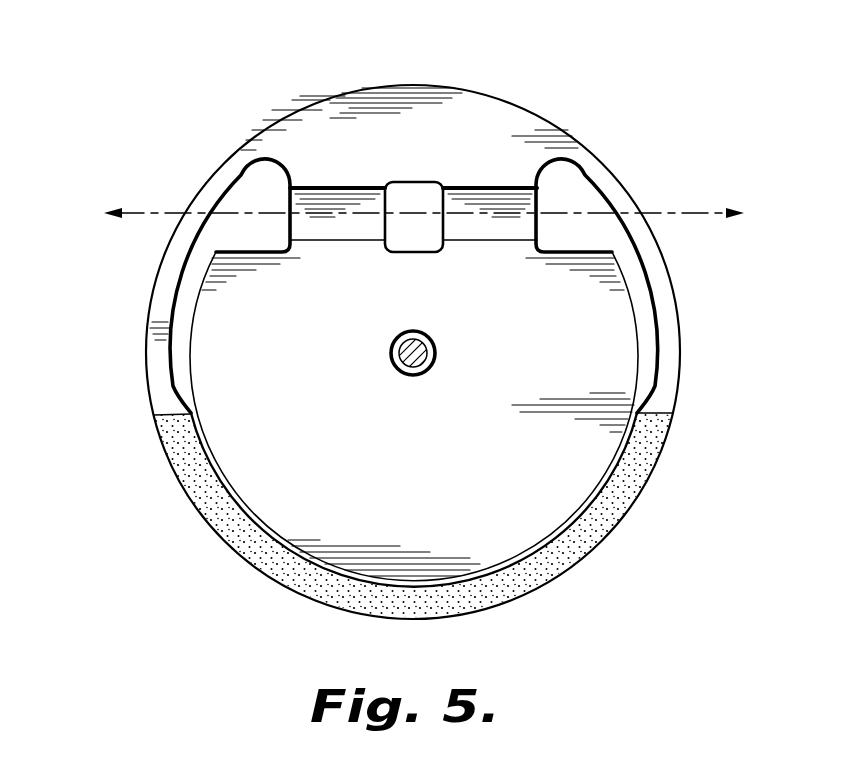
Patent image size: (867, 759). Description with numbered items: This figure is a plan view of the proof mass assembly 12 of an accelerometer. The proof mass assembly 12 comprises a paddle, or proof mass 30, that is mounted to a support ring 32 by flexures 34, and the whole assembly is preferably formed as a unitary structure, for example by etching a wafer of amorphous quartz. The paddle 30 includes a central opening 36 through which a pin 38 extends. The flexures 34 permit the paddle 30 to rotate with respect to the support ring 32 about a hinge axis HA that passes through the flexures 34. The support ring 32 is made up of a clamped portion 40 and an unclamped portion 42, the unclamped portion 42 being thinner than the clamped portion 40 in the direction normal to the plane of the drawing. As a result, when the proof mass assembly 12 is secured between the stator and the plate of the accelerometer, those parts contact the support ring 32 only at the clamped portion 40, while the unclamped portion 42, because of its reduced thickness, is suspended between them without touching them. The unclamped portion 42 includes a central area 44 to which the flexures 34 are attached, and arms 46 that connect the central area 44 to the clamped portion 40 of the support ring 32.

The proof mass assembly 12 is at (195, 101).
The paddle 30 is at (420, 448).
The support ring 32 is at (703, 352).
The flexures 34 is at (328, 202).
The central opening 36 is at (392, 344).
The pin 38 is at (395, 368).
The clamped portion 40 is at (511, 591).
The unclamped portion 42 is at (618, 188).
The central area 44 is at (398, 120).
The arms 46 is at (166, 268).